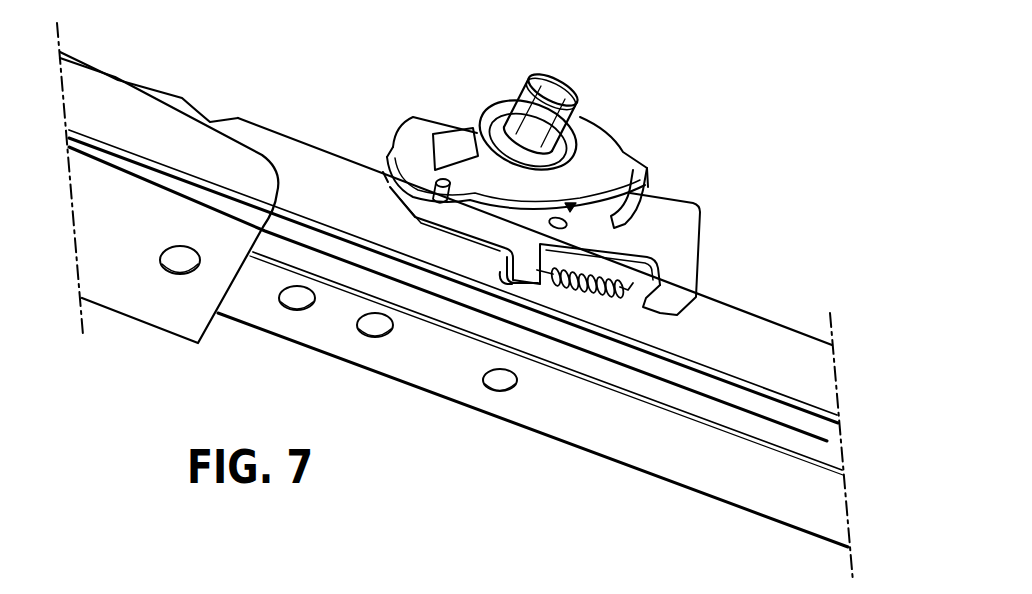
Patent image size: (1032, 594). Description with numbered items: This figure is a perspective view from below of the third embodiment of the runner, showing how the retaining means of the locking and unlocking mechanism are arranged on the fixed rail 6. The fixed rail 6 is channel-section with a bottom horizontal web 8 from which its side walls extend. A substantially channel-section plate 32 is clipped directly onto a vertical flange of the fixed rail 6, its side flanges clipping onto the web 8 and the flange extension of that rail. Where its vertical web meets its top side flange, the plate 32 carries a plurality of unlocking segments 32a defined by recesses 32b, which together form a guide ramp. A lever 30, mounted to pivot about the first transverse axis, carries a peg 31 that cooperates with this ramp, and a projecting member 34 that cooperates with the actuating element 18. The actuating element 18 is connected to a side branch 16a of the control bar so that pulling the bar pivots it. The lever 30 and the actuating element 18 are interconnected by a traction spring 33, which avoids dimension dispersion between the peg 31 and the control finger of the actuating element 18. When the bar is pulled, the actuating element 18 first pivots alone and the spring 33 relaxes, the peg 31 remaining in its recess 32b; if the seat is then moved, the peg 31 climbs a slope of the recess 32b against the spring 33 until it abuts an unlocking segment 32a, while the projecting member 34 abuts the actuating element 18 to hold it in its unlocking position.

The fixed rail 6 is at (697, 505).
The web 8 is at (787, 497).
The side branch 16a is at (515, 98).
The actuating element 18 is at (668, 212).
The lever 30 is at (466, 214).
The peg 31 is at (392, 147).
The plate 32 is at (753, 337).
The unlocking segment 32a is at (277, 133).
The recess 32b is at (210, 122).
The traction spring 33 is at (597, 290).
The projecting member 34 is at (385, 177).